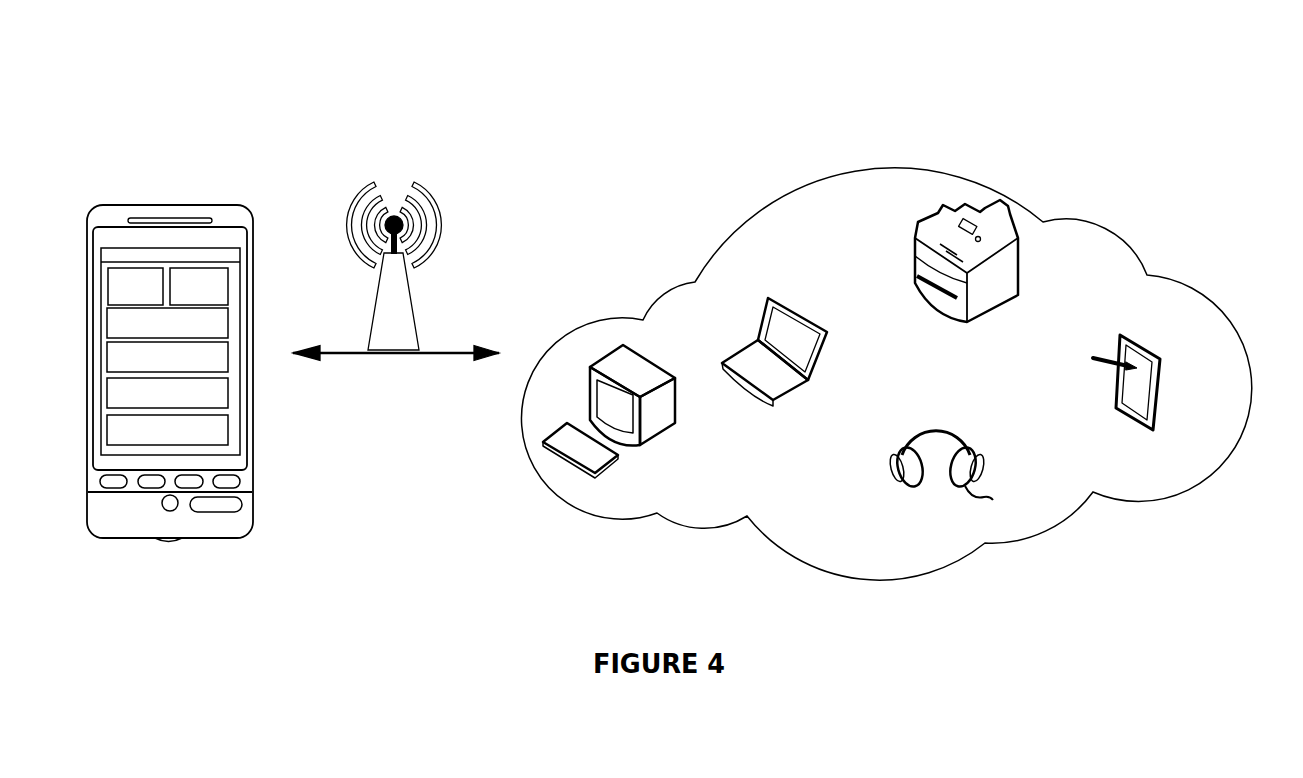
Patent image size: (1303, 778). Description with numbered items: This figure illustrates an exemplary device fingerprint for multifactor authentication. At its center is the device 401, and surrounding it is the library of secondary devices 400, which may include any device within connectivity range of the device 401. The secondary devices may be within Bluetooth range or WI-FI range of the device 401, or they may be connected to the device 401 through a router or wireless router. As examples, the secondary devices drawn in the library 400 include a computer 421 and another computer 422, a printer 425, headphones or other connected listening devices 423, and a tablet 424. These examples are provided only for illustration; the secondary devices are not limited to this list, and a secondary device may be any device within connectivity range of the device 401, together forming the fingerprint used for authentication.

The library of secondary devices 400 is at (690, 88).
The device 401 is at (152, 570).
The computer 421 is at (632, 476).
The computer 422 is at (728, 434).
The headphones or other connected listening devices 423 is at (915, 516).
The tablet 424 is at (1111, 452).
The printer 425 is at (904, 342).